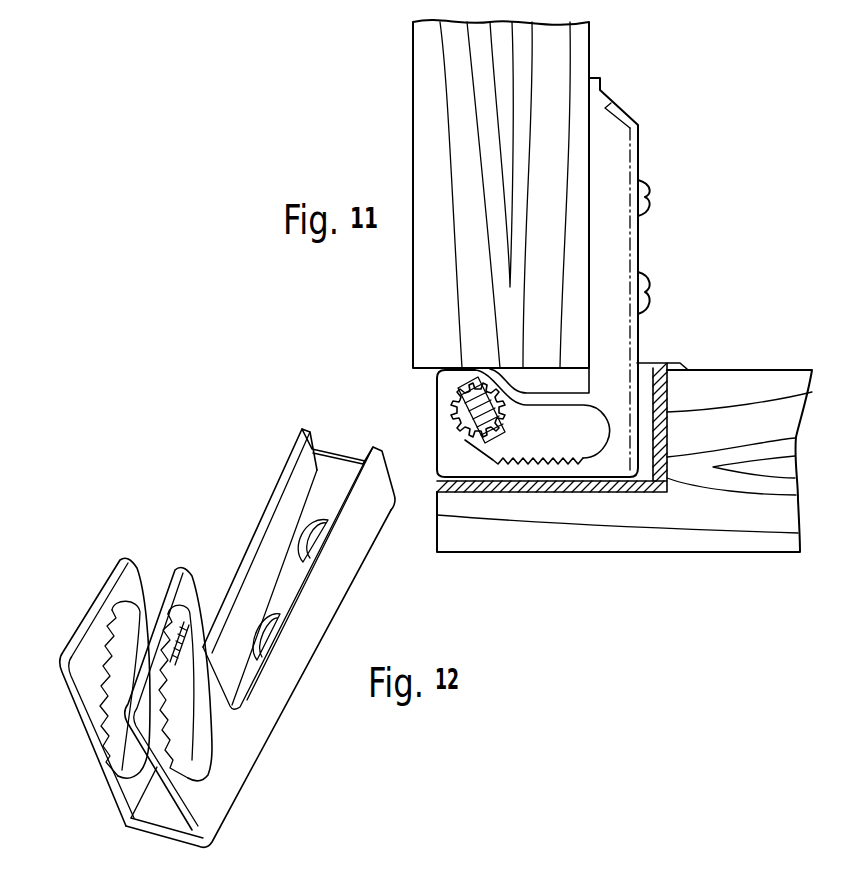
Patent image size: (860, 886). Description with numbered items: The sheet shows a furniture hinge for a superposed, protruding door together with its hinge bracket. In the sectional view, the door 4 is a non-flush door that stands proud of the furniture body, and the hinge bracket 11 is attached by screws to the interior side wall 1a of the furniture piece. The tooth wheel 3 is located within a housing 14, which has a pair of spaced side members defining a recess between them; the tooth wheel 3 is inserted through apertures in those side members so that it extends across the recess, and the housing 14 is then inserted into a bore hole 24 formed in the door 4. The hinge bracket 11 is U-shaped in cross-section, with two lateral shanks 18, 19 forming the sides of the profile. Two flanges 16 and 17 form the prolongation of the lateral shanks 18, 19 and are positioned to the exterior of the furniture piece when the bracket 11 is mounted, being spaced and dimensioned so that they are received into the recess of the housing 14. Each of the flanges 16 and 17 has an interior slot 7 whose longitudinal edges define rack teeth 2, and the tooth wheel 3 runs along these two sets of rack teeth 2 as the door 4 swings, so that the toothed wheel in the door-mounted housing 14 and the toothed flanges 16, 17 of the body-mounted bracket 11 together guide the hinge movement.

In FIG. 11, the interior side wall 1a is at (566, 118).
In FIG. 11, the tooth wheel 3 is at (452, 409).
In FIG. 11, the door 4 is at (780, 434).
In FIG. 11, the housing 14 is at (533, 483).
In FIG. 11, the bore hole 24 is at (660, 478).
In FIG. 12, the rack teeth 2 is at (119, 694).
In FIG. 12, the longitudinal slot 7 is at (182, 580).
In FIG. 12, the hinge bracket 11 is at (338, 598).
In FIG. 12, the flange 16 is at (84, 703).
In FIG. 12, the flange 17 is at (155, 760).
In FIG. 12, the lateral shank 18 is at (250, 542).
In FIG. 12, the lateral shank 19 is at (275, 725).